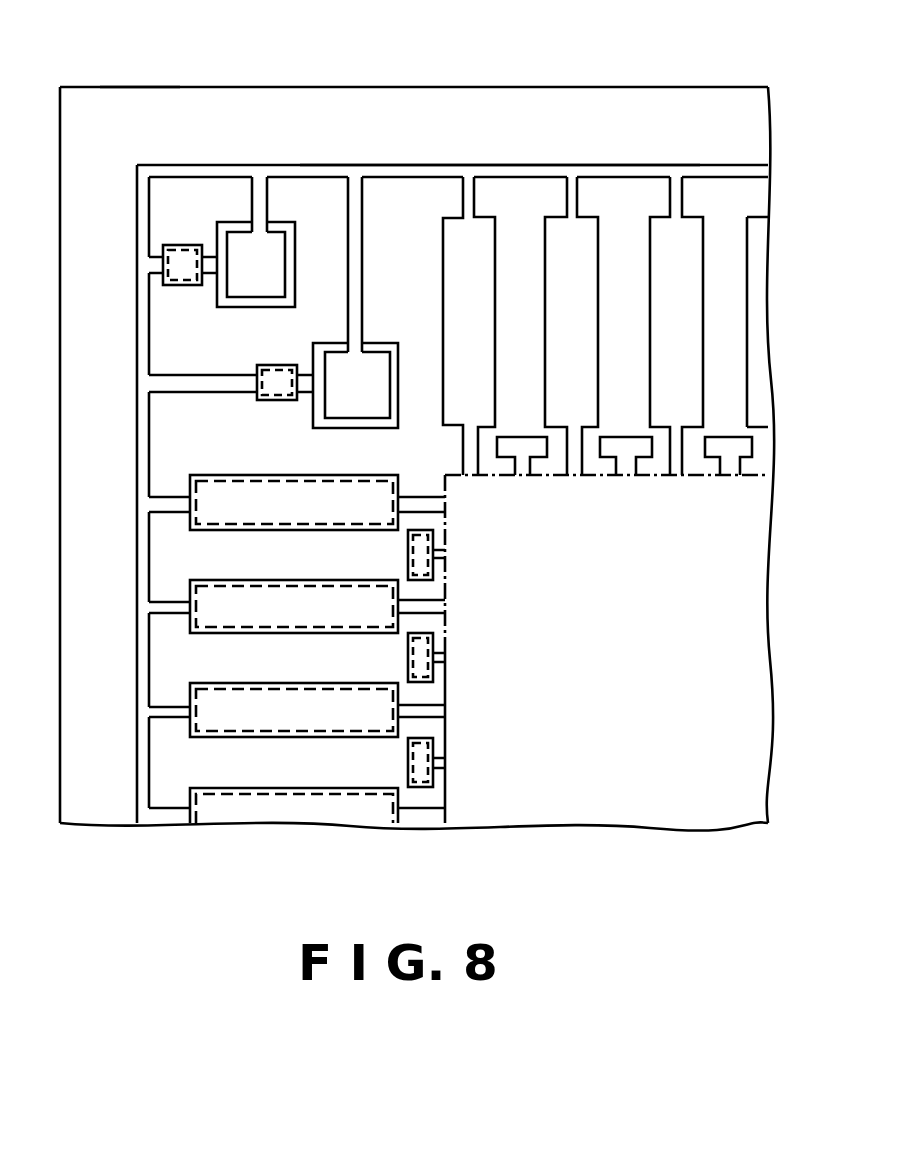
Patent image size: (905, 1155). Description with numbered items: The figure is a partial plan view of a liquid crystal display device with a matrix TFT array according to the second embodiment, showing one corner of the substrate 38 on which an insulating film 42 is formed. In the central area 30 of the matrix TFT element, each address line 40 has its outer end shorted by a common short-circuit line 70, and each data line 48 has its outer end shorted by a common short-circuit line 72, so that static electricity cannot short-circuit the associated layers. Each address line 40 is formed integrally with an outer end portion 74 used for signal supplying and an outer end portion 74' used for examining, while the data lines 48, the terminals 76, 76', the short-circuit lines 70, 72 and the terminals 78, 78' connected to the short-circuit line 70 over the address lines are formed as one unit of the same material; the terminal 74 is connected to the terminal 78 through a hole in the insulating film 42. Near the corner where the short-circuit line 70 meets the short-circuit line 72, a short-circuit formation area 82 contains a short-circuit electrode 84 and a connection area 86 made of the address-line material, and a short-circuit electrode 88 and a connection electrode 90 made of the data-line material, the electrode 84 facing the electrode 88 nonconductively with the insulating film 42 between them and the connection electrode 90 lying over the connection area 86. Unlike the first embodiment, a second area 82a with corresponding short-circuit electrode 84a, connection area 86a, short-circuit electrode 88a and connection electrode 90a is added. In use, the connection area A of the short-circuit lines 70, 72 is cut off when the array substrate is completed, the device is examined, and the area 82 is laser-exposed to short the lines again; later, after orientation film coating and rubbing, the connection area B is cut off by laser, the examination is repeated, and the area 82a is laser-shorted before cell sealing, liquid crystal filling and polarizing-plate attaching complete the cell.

The substrate 38 is at (652, 85).
The insulating film 42 is at (135, 95).
The short-circuit line 70 is at (135, 432).
The short-circuit line 72 is at (505, 166).
The short-circuit formation area 82 is at (214, 228).
The short-circuit electrode 84 is at (272, 226).
The connection area 86 is at (172, 287).
The short-circuit electrode 88 is at (270, 245).
The connection electrode 90 is at (183, 285).
The short-circuit formation area 82a is at (312, 350).
The short-circuit electrode 84a is at (362, 345).
The connection area 86a is at (268, 388).
The short-circuit electrode 88a is at (378, 360).
The connection electrode 90a is at (284, 398).
The terminal 76 is at (621, 326).
The terminal 76' is at (694, 486).
The data line 48 is at (573, 447).
The central area 30 is at (640, 640).
The address line 40 is at (432, 607).
The outer end portion 74 is at (317, 736).
The outer end portion 74' is at (463, 753).
The terminal 78 is at (297, 649).
The terminal 78' is at (474, 781).
The connection area A is at (140, 172).
The connection area B is at (248, 186).